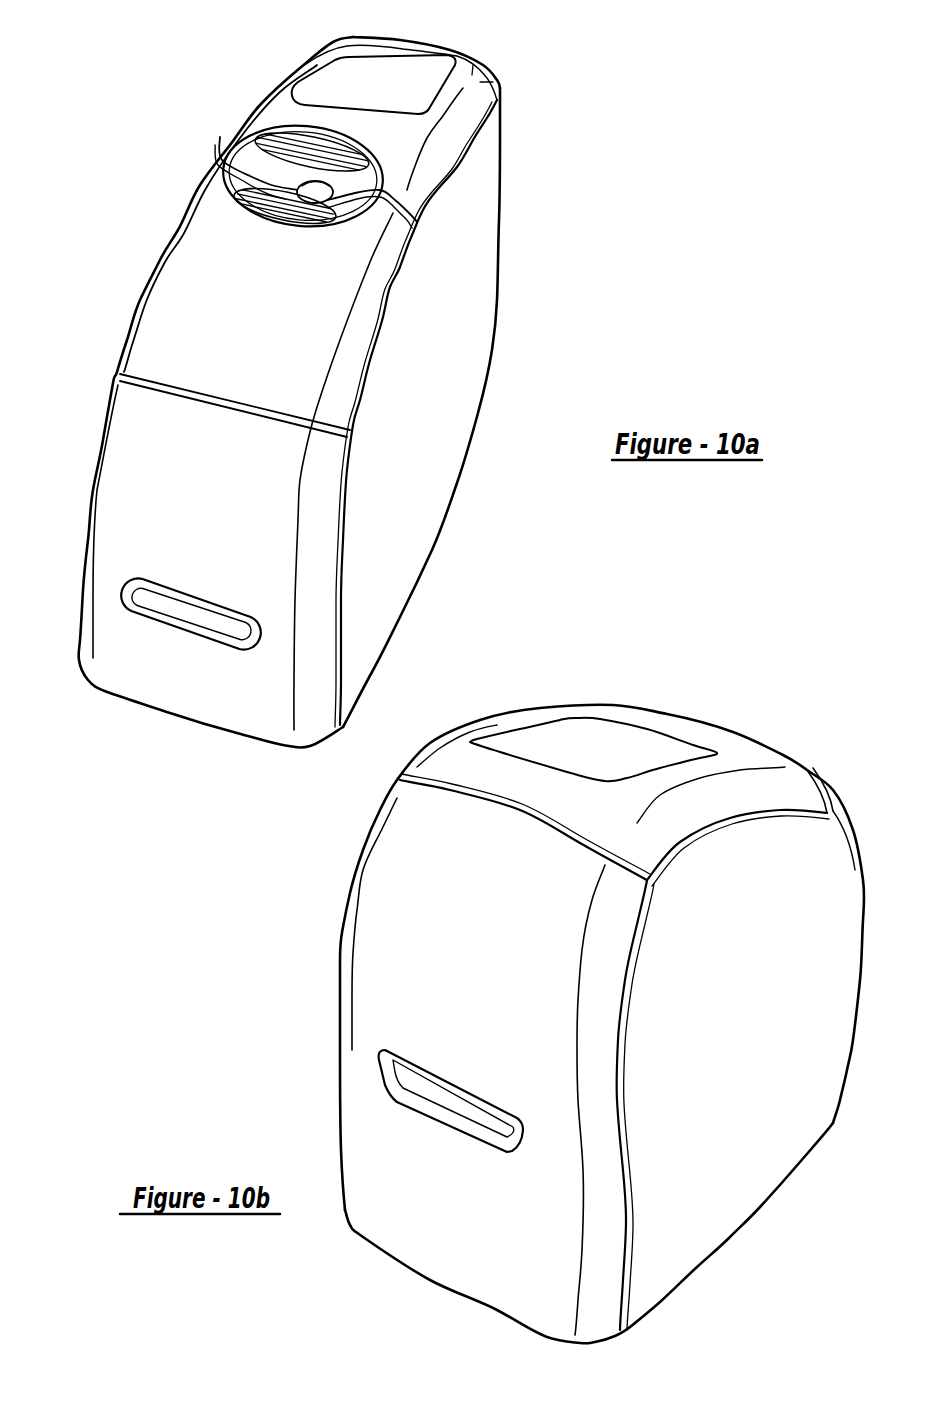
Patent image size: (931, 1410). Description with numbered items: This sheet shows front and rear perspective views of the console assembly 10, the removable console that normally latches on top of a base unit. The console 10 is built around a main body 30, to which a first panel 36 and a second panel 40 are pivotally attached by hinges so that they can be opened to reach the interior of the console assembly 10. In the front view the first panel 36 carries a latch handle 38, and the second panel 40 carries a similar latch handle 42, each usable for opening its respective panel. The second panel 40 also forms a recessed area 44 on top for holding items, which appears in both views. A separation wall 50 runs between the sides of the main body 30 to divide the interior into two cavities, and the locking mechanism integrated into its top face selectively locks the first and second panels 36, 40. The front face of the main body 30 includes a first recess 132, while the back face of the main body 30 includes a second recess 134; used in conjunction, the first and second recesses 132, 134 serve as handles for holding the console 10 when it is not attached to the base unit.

In FIG. 10A, the console assembly 10 is at (580, 277).
In FIG. 10B, the console assembly 10 is at (752, 673).
In FIG. 10A, the main body 30 is at (440, 430).
In FIG. 10B, the main body 30 is at (720, 1177).
In FIG. 10A, the first panel 36 is at (213, 300).
In FIG. 10A, the latch handle 38 is at (293, 203).
In FIG. 10A, the second panel 40 is at (292, 116).
In FIG. 10B, the second panel 40 is at (500, 778).
In FIG. 10A, the latch handle 42 is at (355, 147).
In FIG. 10A, the recessed area 44 is at (349, 85).
In FIG. 10B, the recessed area 44 is at (556, 736).
In FIG. 10A, the separation wall 50 is at (308, 192).
In FIG. 10A, the first recess 132 is at (193, 593).
In FIG. 10B, the second recess 134 is at (430, 1073).